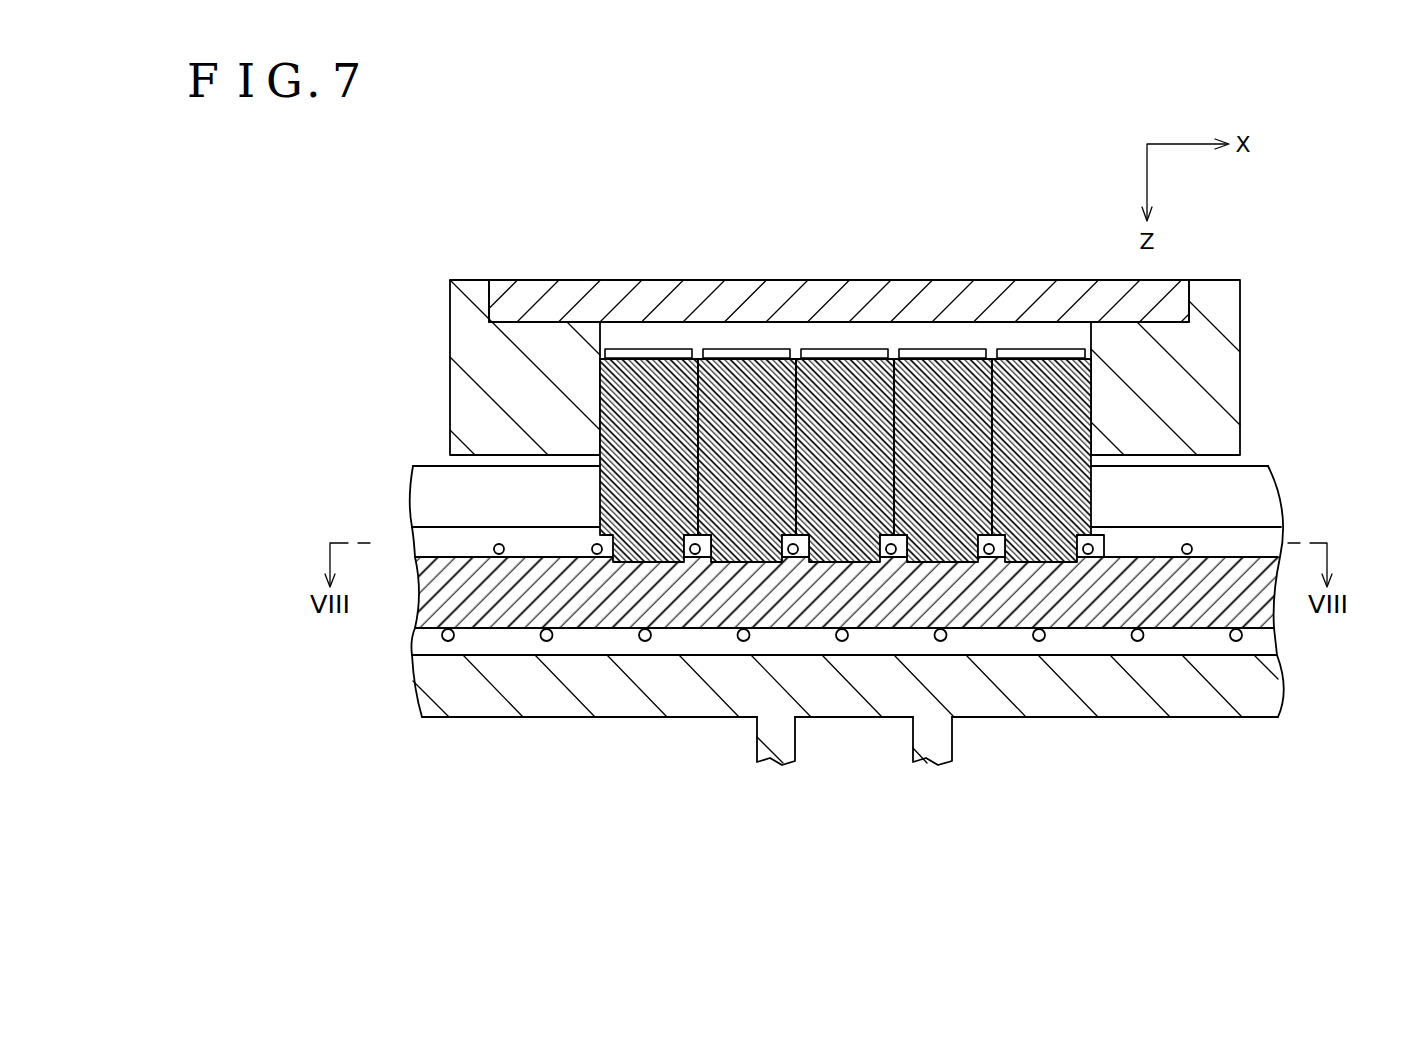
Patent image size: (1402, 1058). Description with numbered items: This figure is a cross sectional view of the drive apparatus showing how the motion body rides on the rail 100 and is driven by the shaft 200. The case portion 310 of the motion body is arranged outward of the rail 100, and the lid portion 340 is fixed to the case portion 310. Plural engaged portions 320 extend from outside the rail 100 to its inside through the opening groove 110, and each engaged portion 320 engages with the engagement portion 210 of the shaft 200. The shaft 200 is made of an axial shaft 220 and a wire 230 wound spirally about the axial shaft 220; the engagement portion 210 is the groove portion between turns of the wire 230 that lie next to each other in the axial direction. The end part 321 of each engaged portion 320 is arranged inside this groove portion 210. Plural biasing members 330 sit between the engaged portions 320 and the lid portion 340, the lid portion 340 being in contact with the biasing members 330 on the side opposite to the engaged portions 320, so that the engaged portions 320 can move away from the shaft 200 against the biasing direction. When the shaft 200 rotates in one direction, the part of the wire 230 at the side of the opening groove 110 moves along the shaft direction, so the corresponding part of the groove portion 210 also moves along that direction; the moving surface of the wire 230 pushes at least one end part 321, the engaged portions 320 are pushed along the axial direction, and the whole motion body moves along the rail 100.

The rail 100 is at (417, 503).
The opening groove 110 is at (1252, 502).
The shaft 200 is at (1166, 624).
The engagement portion 210 is at (823, 552).
The axial shaft 220 is at (1079, 618).
The wire 230 is at (695, 560).
The case portion 310 is at (467, 394).
The engaged portion 320 is at (1014, 375).
The end part 321 is at (830, 549).
The biasing member 330 is at (1053, 350).
The lid portion 340 is at (521, 298).